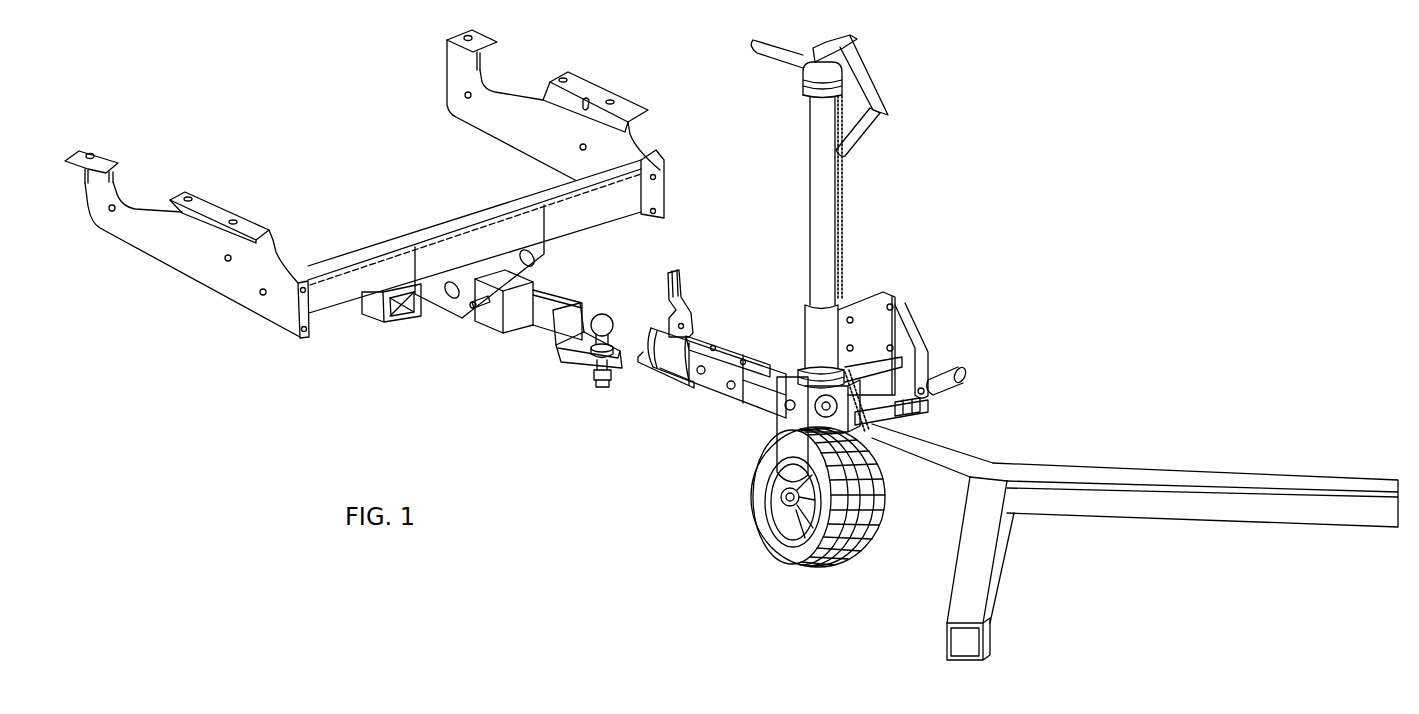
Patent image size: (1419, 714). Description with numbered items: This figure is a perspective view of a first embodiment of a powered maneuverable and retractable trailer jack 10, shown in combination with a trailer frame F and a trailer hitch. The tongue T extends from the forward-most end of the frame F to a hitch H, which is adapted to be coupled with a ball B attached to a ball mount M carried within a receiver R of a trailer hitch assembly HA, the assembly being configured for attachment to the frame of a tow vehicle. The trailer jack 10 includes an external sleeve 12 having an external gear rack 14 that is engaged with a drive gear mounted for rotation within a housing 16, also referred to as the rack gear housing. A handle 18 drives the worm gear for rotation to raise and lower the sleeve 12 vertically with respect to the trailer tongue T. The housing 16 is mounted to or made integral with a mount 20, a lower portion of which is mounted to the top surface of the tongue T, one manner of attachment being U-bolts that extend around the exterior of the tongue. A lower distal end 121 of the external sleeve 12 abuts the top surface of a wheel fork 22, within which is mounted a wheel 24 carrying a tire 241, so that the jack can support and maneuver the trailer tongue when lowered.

The trailer jack 10 is at (930, 155).
The external sleeve 12 is at (817, 197).
The external gear rack 14 is at (842, 216).
The housing 16 is at (870, 308).
The handle 18 is at (945, 373).
The mount 20 is at (929, 406).
The wheel fork 22 is at (788, 447).
The wheel 24 is at (787, 520).
The tire 241 is at (795, 560).
The lower distal end 121 is at (805, 378).
The hitch H is at (700, 340).
The trailer hitch assembly HA is at (388, 221).
The receiver R is at (493, 312).
The ball mount M is at (540, 320).
The hitch ball B is at (608, 320).
The tongue T is at (945, 451).
The trailer frame F is at (1173, 481).